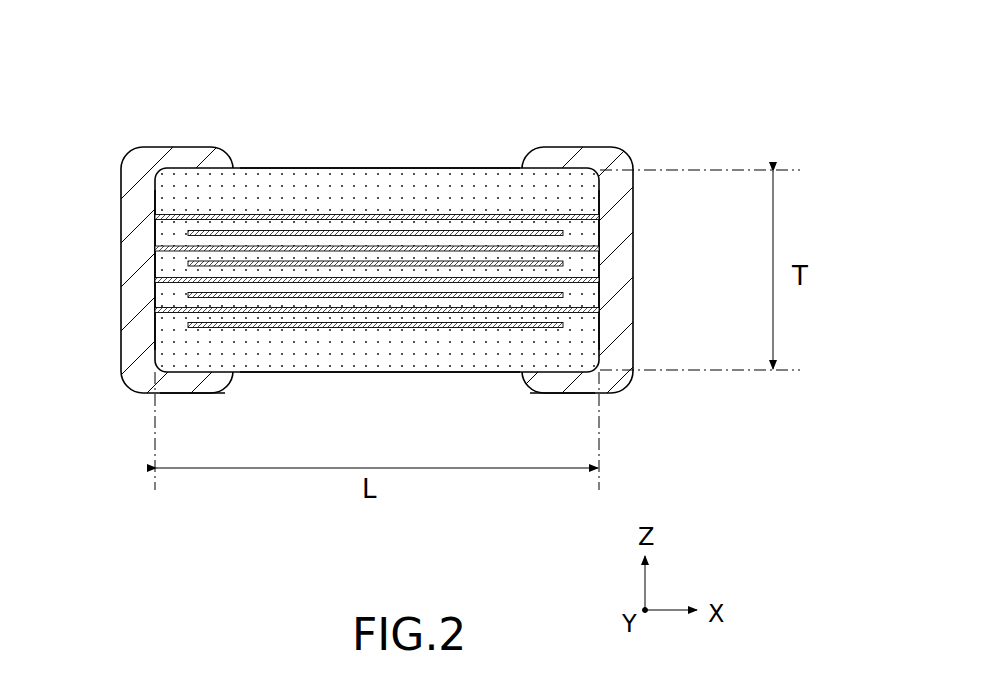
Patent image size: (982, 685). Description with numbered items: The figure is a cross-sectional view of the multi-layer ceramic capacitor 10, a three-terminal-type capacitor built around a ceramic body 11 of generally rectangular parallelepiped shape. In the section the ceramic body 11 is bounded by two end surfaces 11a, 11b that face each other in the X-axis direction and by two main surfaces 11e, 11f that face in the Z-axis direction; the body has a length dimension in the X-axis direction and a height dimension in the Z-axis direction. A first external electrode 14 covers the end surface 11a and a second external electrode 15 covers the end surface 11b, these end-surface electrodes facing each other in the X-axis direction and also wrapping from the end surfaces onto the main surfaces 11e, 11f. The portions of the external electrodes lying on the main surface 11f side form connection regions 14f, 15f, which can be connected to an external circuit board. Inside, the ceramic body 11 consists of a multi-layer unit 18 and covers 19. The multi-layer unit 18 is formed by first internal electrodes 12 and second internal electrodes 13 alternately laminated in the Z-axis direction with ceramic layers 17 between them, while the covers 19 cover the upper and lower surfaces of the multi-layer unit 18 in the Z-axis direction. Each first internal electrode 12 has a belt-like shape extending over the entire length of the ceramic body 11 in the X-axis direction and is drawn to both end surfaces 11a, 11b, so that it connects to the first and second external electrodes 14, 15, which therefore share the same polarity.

The multi-layer ceramic capacitor 10 is at (156, 58).
The ceramic body 11 is at (362, 138).
The end surface 11a is at (155, 262).
The end surface 11b is at (600, 263).
The main surface 11e is at (435, 168).
The main surface 11f is at (447, 374).
The first internal electrode 12 is at (257, 307).
The second internal electrode 13 is at (447, 325).
The first external electrode 14 is at (134, 167).
The connection region 14f is at (173, 398).
The second external electrode 15 is at (597, 178).
The connection region 15f is at (590, 396).
The ceramic layer 17 is at (358, 272).
The multi-layer unit 18 is at (550, 286).
The cover 19 is at (540, 206).